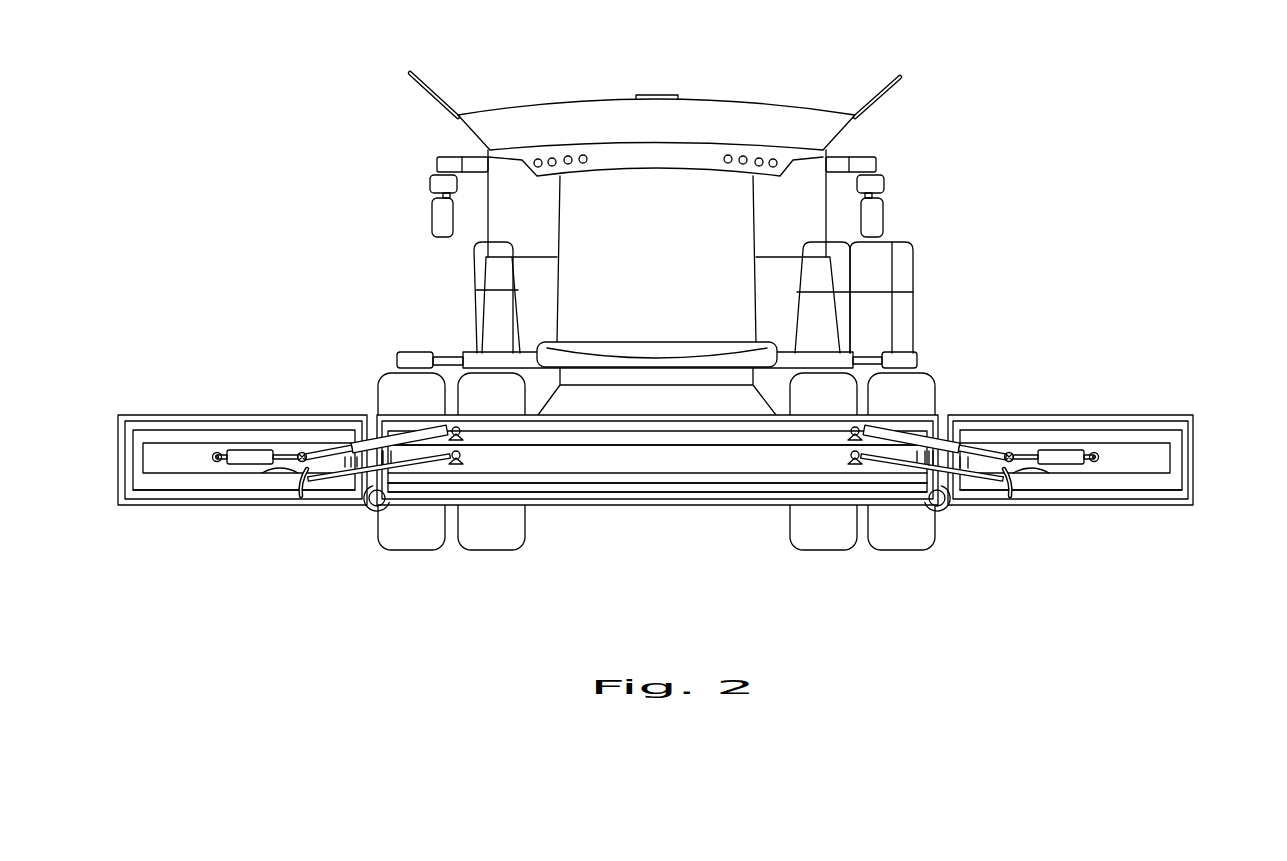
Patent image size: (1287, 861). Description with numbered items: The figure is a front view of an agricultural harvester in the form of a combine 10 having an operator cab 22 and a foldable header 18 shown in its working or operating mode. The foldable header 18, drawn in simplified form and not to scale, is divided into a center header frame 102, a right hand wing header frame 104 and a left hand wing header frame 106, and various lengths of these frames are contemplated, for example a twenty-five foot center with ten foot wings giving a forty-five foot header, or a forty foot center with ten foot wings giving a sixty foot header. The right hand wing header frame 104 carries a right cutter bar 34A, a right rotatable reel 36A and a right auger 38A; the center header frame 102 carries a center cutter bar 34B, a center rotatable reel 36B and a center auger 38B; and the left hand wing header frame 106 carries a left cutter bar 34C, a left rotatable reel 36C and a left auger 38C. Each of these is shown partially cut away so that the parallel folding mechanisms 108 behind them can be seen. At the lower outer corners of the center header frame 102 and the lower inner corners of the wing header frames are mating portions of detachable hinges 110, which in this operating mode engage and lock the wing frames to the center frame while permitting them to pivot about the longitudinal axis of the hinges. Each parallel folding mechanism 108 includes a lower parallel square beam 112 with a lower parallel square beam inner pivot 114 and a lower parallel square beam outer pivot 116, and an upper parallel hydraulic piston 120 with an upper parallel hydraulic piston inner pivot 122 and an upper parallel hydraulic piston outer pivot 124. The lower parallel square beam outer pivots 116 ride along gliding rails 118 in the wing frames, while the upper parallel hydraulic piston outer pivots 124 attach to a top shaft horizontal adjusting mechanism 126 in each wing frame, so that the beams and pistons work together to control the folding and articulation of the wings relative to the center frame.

The combine 10 is at (748, 102).
The operator cab 22 is at (582, 240).
The foldable header 18 is at (720, 498).
The center header frame 102 is at (638, 500).
The right hand wing header frame 104 is at (148, 414).
The left hand wing header frame 106 is at (1180, 413).
The parallel folding mechanism 108 is at (423, 467).
The detachable hinge 110 is at (375, 513).
The lower parallel square beam 112 is at (396, 473).
The lower parallel square beam inner pivot 114 is at (460, 455).
The lower parallel square beam outer pivot 116 is at (297, 482).
The gliding rail 118 is at (268, 471).
The upper parallel hydraulic piston 120 is at (403, 436).
The upper parallel hydraulic piston inner pivot 122 is at (456, 425).
The upper parallel hydraulic piston outer pivot 124 is at (302, 452).
The top shaft horizontal adjusting mechanism 126 is at (247, 450).
The right cutter bar 34A is at (150, 493).
The right rotatable reel 36A is at (147, 438).
The right auger 38A is at (157, 462).
The center cutter bar 34B is at (608, 495).
The center rotatable reel 36B is at (758, 483).
The center auger 38B is at (705, 460).
The left cutter bar 34C is at (1173, 495).
The left rotatable reel 36C is at (1165, 438).
The left auger 38C is at (1157, 460).